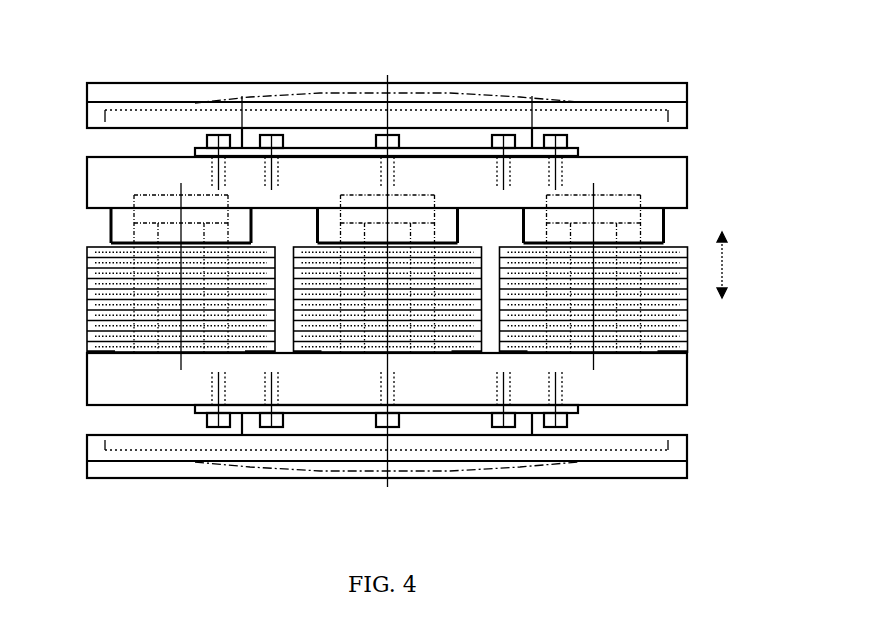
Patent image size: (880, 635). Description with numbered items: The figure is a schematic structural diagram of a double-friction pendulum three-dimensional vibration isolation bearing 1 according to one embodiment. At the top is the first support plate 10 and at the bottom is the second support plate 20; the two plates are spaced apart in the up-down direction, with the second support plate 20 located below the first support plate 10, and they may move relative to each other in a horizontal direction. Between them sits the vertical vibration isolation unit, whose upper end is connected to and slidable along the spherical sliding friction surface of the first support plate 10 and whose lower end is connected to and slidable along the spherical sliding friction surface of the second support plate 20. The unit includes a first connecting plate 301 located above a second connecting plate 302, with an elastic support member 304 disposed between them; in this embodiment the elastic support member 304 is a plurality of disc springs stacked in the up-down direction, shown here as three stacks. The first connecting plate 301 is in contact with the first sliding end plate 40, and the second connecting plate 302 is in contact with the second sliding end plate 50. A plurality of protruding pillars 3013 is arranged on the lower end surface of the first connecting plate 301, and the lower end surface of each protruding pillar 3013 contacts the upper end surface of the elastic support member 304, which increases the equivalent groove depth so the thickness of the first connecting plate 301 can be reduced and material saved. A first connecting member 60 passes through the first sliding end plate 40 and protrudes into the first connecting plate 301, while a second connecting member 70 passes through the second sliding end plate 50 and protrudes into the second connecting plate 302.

The double-friction pendulum three-dimensional vibration isolation bearing 1 is at (382, 271).
The first support plate 10 is at (197, 92).
The second support plate 20 is at (165, 463).
The first sliding end plate 40 is at (318, 145).
The second sliding end plate 50 is at (333, 423).
The first connecting member 60 is at (555, 141).
The second connecting member 70 is at (568, 418).
The first connecting plate 301 is at (113, 187).
The second connecting plate 302 is at (115, 372).
The protruding pillar 3013 is at (130, 216).
The elastic support member 304 is at (103, 298).